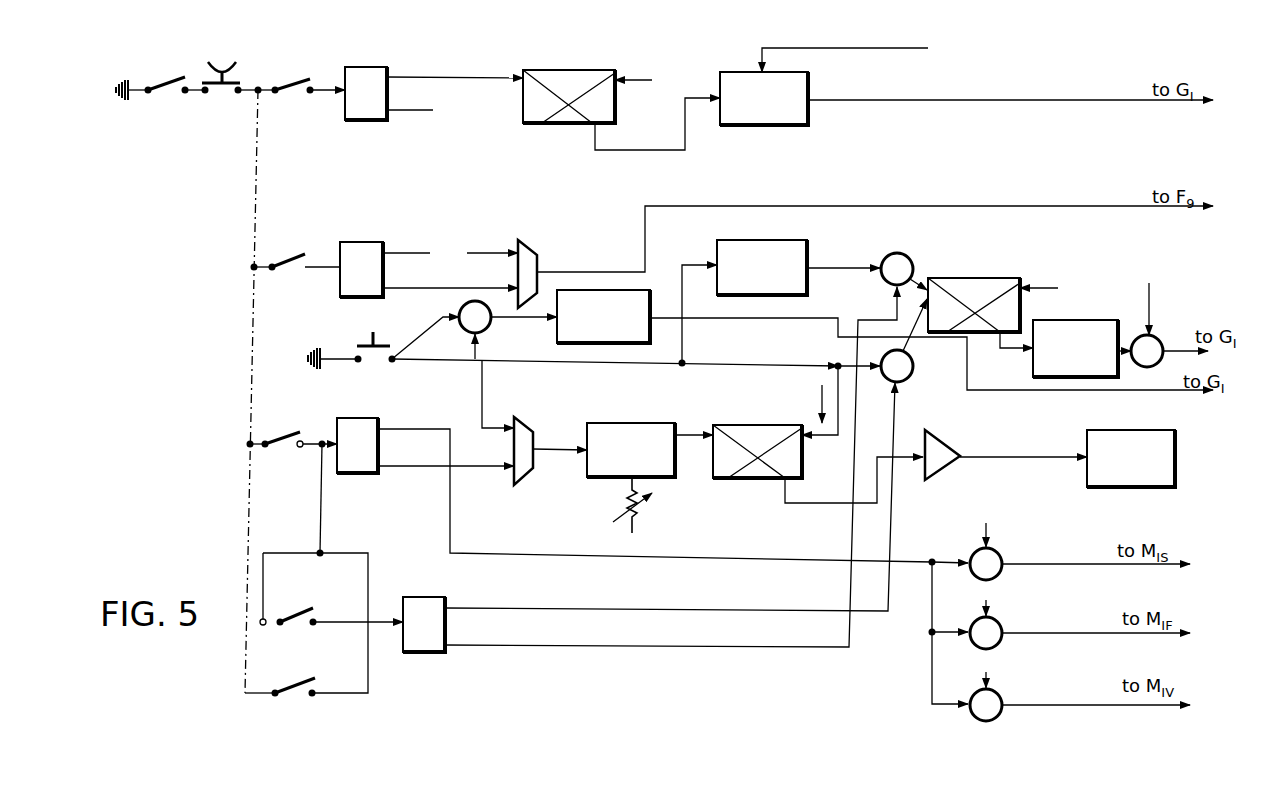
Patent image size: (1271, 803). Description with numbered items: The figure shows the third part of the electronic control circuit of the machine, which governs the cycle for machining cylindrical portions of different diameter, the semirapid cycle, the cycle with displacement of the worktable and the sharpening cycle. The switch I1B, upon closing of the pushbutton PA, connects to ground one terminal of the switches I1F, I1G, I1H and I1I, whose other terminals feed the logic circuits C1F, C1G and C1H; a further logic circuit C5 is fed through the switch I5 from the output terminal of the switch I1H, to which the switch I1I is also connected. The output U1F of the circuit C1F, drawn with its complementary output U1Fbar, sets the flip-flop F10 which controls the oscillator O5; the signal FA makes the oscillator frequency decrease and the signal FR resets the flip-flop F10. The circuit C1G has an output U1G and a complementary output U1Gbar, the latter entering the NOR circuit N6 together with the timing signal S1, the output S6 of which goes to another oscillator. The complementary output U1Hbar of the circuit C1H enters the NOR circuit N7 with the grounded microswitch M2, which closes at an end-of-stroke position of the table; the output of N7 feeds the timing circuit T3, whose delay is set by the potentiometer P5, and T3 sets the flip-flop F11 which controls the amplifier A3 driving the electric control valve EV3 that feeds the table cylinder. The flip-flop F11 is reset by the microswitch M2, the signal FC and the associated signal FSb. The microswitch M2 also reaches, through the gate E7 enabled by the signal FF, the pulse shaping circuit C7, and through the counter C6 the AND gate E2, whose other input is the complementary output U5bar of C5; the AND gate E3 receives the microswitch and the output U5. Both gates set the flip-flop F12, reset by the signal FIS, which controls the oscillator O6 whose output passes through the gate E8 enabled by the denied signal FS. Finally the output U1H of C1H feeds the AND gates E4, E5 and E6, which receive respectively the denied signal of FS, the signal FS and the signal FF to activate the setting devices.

The switch I1B is at (160, 84).
The pushbutton PA is at (224, 62).
The switch I1F is at (290, 84).
The logic circuit C1F is at (366, 72).
The output of circuit C1F U1F is at (455, 67).
The complementary output of circuit C1F U1Fbar is at (410, 86).
The flip-flop F10 is at (560, 74).
The signal FR is at (645, 80).
The signal FA is at (794, 48).
The oscillator O5 is at (773, 118).
The switch I1G is at (286, 258).
The logic circuit C1G is at (362, 246).
The output of circuit C1G U1G is at (406, 241).
The complementary output of circuit C1G U1Gbar is at (408, 264).
The timing circuit signal S1 is at (492, 252).
The NOR logic circuit N6 is at (530, 246).
The output signal of circuit N6 S6 is at (604, 272).
The gate E7 is at (460, 308).
The signal of end of finishing FF is at (488, 349).
The microswitch M2 is at (376, 328).
The pulse shaping circuit C7 is at (648, 300).
The counter C6 is at (808, 250).
The AND gate E2 is at (900, 256).
The AND gate E3 is at (913, 372).
The flip-flop F12 is at (966, 280).
The signal of end of roughing-out increment FIS is at (1046, 284).
The oscillator O6 is at (1088, 328).
The gate circuit E8 is at (1136, 338).
The signal FS is at (1167, 258).
The switch I1H is at (280, 438).
The logic circuit C1H is at (358, 422).
The output of circuit C1H U1H is at (673, 482).
The complementary output of circuit C1H U1Hbar is at (403, 438).
The NOR circuit N7 is at (528, 424).
The timing circuit T3 is at (632, 430).
The potentiometer P5 is at (638, 509).
The flip-flop F11 is at (774, 426).
The signal FSb is at (806, 402).
The signal FC is at (804, 433).
The amplifier A3 is at (940, 444).
The electric control valve EV3 is at (1124, 440).
The AND gate E4 is at (974, 550).
The AND gate E5 is at (973, 619).
The AND gate E6 is at (973, 692).
The switch I5 is at (296, 612).
The switch I1I is at (292, 686).
The logic circuit C5 is at (444, 604).
The output of circuit C5 U5 is at (670, 497).
The complementary output of circuit C5 U5bar is at (473, 619).